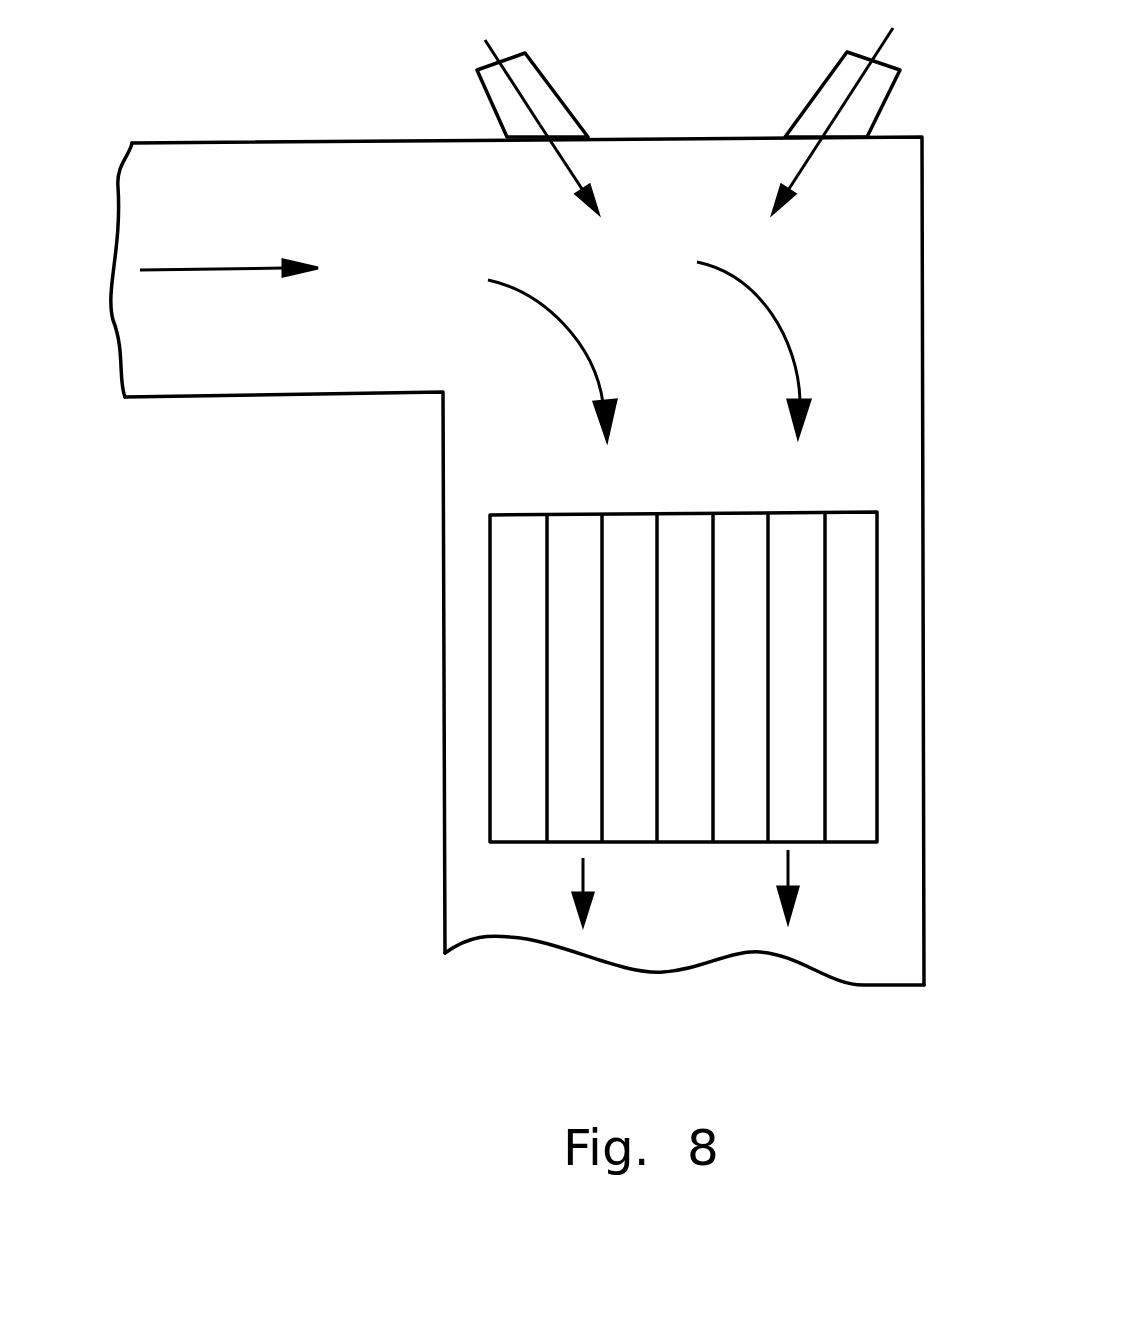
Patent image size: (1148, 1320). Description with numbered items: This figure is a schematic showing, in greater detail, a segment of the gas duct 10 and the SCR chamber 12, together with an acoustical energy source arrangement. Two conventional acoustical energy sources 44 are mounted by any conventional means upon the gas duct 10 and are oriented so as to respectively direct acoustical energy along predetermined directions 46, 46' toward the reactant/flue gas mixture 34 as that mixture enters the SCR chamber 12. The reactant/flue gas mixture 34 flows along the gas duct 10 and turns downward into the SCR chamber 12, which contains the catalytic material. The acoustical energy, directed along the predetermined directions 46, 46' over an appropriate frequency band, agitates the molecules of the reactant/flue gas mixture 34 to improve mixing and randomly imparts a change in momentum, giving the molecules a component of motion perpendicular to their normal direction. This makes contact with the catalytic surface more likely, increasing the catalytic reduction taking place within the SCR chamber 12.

The gas duct 10 is at (667, 137).
The SCR chamber 12 is at (490, 808).
The acoustical energy sources 44 is at (515, 53).
The predetermined direction 46 is at (832, 161).
The predetermined direction 46' is at (609, 169).
The reactant/flue gas mixture 34 is at (183, 270).